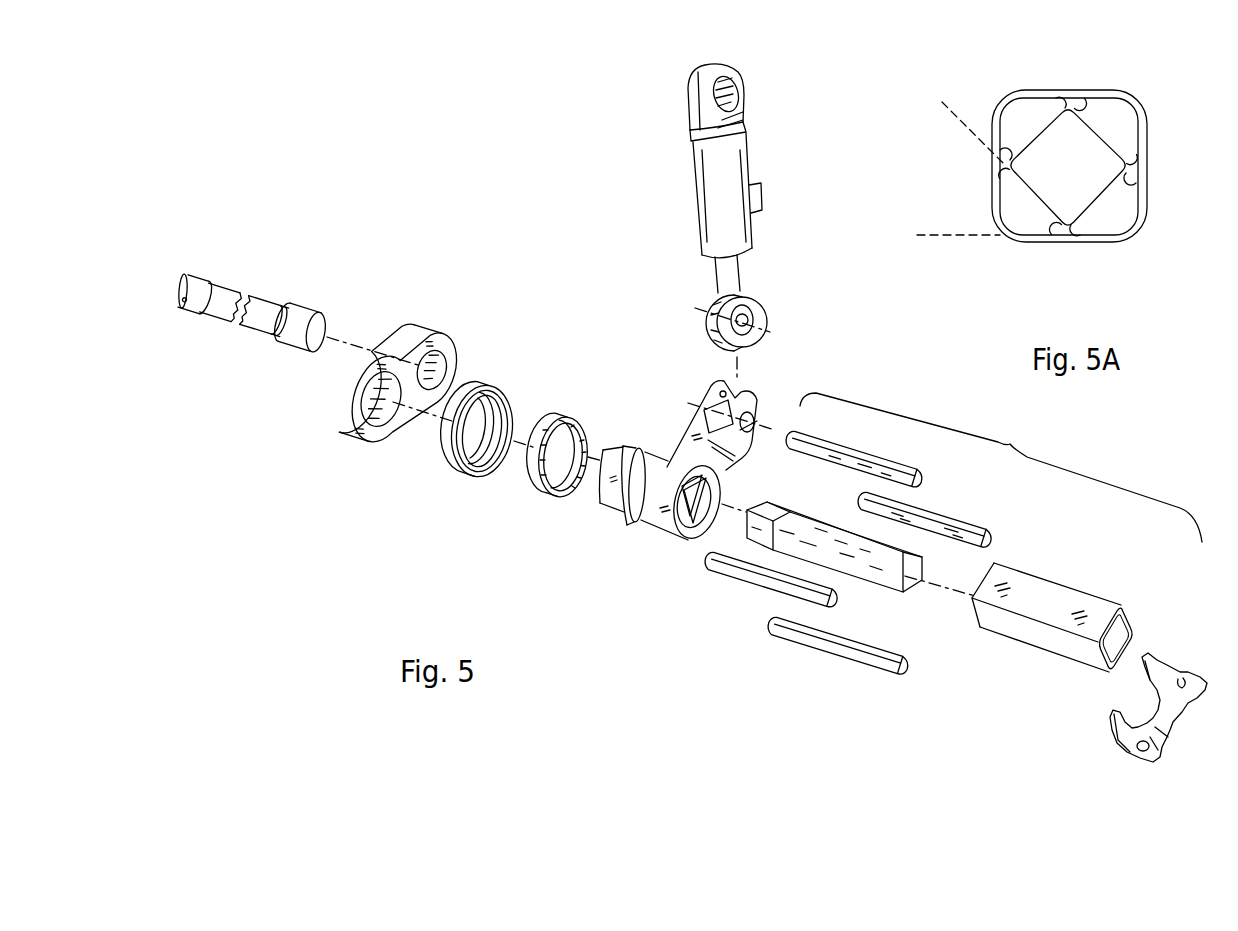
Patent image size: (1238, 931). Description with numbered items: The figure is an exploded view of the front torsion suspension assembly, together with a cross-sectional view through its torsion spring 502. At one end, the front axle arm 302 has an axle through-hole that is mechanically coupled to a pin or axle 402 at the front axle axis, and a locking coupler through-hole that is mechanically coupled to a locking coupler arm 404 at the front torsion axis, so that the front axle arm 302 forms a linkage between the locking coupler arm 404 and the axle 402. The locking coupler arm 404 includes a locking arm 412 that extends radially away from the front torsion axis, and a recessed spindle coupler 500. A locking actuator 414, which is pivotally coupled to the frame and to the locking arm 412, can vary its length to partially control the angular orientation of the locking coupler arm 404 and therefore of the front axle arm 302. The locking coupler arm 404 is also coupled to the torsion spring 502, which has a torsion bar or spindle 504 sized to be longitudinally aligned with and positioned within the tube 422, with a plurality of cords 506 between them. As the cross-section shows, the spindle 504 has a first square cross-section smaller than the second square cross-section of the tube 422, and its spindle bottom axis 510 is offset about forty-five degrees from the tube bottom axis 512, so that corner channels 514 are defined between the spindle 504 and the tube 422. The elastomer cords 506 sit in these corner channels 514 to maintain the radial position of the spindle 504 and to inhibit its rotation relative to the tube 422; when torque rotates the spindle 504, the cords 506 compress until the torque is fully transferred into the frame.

In FIG. 5, the front axle arm 302 is at (338, 403).
In FIG. 5, the pin or axle 402 is at (228, 296).
In FIG. 5, the locking coupler arm 404 is at (661, 523).
In FIG. 5, the locking arm 412 is at (683, 450).
In FIG. 5, the locking actuator 414 is at (707, 195).
In FIG. 5, the tube 422 is at (1043, 646).
In FIG. 5A, the tube 422 is at (1069, 91).
In FIG. 5, the recessed spindle coupler 500 is at (697, 534).
In FIG. 5, the torsion spring 502 is at (1010, 450).
In FIG. 5, the torsion bar or spindle 504 is at (913, 582).
In FIG. 5A, the torsion bar or spindle 504 is at (1110, 168).
In FIG. 5, the cords 506 is at (737, 577).
In FIG. 5A, the spindle bottom axis 510 is at (957, 118).
In FIG. 5A, the tube bottom axis 512 is at (937, 240).
In FIG. 5A, the corner channels 514 is at (1028, 113).